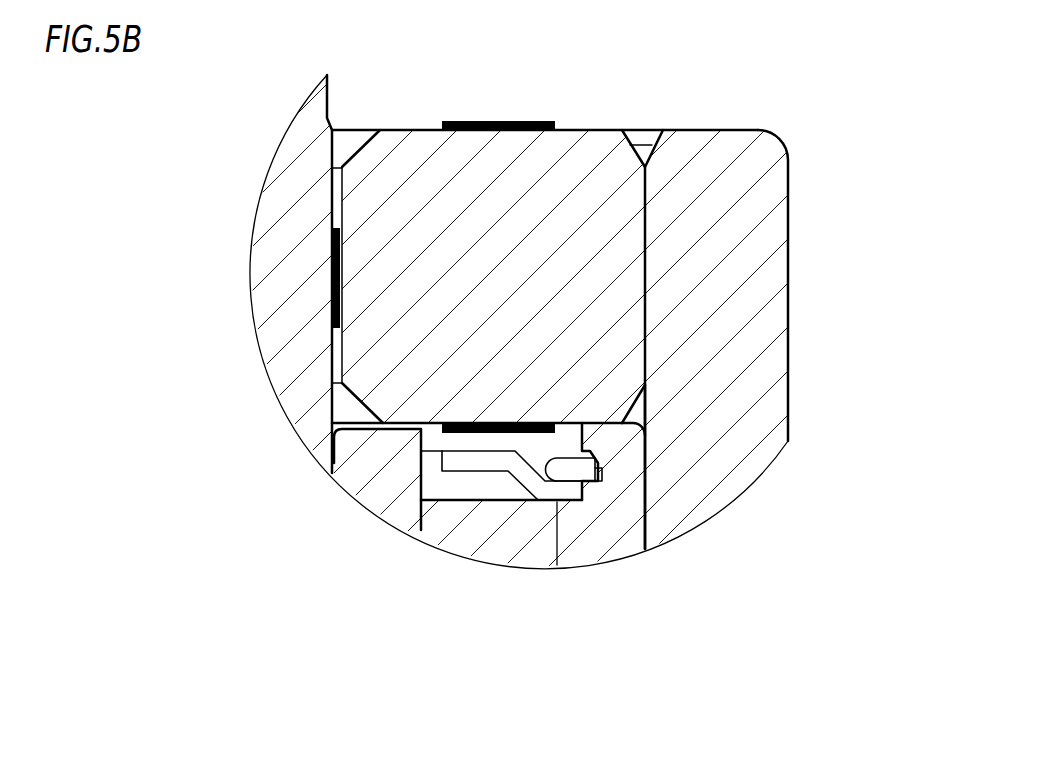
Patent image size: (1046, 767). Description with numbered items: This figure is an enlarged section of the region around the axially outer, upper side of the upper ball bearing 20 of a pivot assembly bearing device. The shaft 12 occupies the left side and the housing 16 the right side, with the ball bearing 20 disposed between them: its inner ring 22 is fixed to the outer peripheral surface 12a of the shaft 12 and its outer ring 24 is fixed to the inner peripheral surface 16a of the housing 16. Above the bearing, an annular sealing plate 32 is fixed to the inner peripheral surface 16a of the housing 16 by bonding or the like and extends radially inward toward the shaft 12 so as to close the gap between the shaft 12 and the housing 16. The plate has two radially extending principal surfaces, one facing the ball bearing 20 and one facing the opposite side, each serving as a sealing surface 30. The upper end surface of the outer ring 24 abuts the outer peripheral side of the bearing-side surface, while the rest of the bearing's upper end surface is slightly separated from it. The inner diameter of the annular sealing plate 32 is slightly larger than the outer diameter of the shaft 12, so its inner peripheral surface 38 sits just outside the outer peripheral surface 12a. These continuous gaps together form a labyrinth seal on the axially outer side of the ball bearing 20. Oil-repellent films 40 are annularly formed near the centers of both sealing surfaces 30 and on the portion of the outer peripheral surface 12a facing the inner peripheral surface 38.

The shaft 12 is at (277, 332).
The outer peripheral surface of the shaft 12a is at (332, 410).
The housing 16 is at (760, 325).
The inner peripheral surface of the housing 16a is at (646, 413).
The ball bearing 20 is at (646, 484).
The inner ring 22 is at (378, 478).
The outer ring 24 is at (607, 518).
The sealing surface 30 is at (427, 580).
The annular sealing plate 32 is at (590, 200).
The inner peripheral surface of the annular sealing plate 38 is at (337, 187).
The oil-repellent film 40 is at (527, 582).